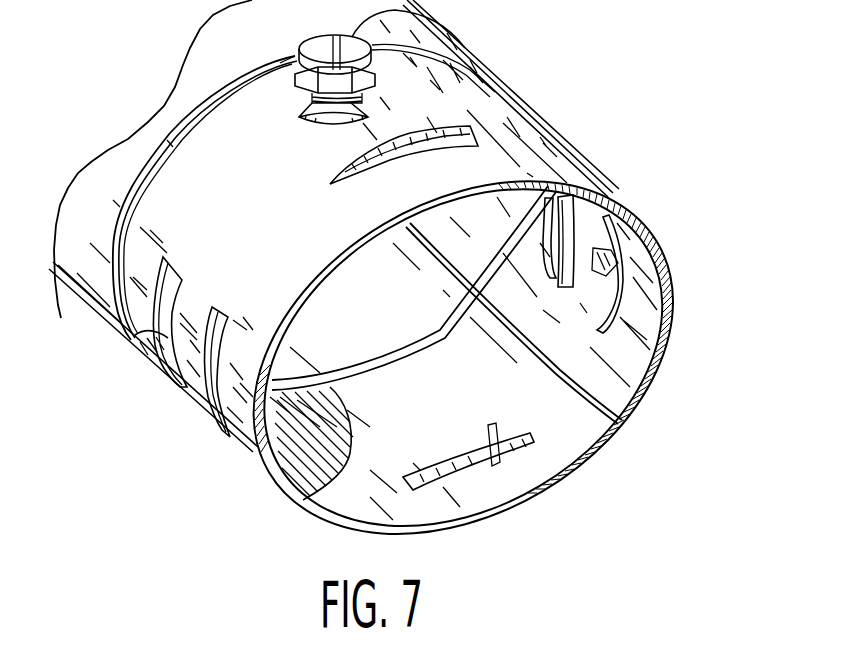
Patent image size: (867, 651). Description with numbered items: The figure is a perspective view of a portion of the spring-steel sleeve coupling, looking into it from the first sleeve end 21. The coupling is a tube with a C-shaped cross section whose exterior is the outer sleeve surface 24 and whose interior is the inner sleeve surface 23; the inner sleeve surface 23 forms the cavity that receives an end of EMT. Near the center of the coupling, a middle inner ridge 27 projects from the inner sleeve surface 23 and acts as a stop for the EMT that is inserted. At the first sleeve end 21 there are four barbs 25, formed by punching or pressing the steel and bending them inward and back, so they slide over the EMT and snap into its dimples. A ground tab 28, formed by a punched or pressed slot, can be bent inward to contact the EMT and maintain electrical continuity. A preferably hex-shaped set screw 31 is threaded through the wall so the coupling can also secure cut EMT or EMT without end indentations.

The first sleeve end 21 is at (662, 365).
The inner sleeve surface 23 is at (549, 428).
The outer sleeve surface 24 is at (540, 148).
The barbs 25 is at (383, 150).
The middle inner ridge 27 is at (347, 497).
The ground tab 28 is at (553, 227).
The set screw 31 is at (445, 26).